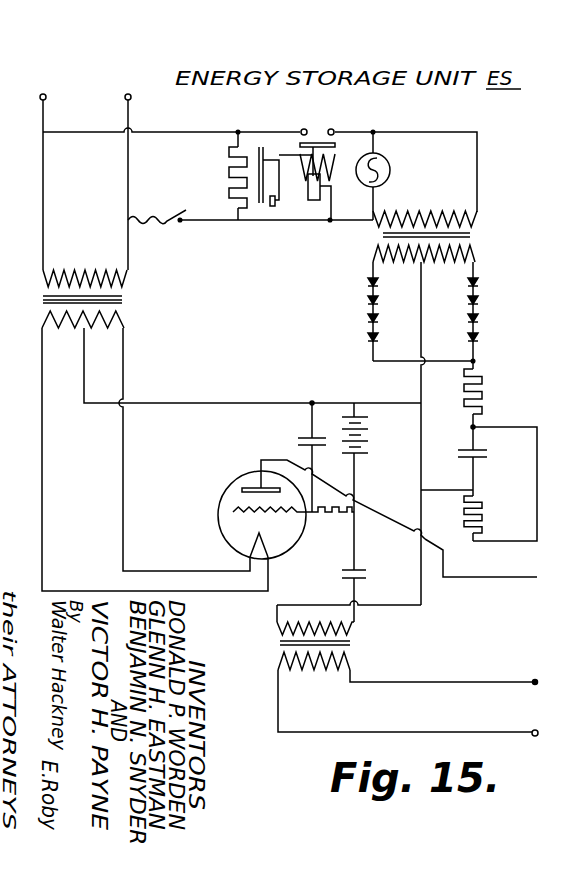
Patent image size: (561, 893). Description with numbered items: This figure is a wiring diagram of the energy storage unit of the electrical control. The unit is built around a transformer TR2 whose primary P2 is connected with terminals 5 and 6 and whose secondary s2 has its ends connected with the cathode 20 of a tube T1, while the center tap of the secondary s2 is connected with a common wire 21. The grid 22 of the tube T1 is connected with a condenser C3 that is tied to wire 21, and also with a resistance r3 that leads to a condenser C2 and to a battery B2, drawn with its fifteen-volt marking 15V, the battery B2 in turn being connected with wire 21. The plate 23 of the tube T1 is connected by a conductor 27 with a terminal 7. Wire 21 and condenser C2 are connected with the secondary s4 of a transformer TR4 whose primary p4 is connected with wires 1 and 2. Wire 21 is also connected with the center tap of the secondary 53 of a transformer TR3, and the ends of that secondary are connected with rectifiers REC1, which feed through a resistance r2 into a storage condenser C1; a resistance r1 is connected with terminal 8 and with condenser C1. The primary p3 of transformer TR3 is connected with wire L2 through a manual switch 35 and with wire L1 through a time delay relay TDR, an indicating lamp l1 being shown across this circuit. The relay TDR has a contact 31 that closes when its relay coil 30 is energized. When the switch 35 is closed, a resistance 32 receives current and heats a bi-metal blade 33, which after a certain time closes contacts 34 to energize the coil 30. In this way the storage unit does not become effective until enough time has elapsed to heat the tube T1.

The terminal 5 is at (42, 102).
The terminal 6 is at (127, 102).
The wire L1 is at (41, 166).
The wire L2 is at (125, 165).
The primary P2 is at (88, 268).
The transformer TR2 is at (124, 298).
The secondary s2 is at (73, 333).
The wire 21 is at (83, 397).
The time delay relay TDR is at (345, 121).
The resistance 32 is at (228, 166).
The bi-metal blade 33 is at (265, 160).
The contact 31 is at (336, 145).
The relay coil 30 is at (326, 178).
The contacts 34 is at (275, 206).
The manual switch 35 is at (170, 223).
The indicating lamp l1 is at (390, 169).
The primary p3 is at (432, 204).
The transformer TR3 is at (450, 236).
The secondary winding of transformer TR3 53 is at (372, 254).
The rectifiers REC1 is at (366, 322).
The resistance r2 is at (482, 403).
The condenser C1 is at (488, 452).
The resistance r1 is at (492, 512).
The wire 2 is at (538, 477).
The terminal 8 is at (548, 534).
The terminal 7 is at (489, 564).
The conductor from tube plate 27 is at (387, 514).
The tube T1 is at (238, 472).
The plate 23 is at (242, 489).
The grid 22 is at (233, 513).
The cathode 20 is at (250, 547).
The resistance r3 is at (333, 526).
The condenser C3 is at (294, 429).
The battery B2 is at (369, 443).
The battery voltage 15V is at (371, 427).
The condenser C2 is at (343, 580).
The transformer TR4 is at (278, 644).
The secondary s4 is at (354, 630).
The primary p4 is at (334, 661).
The wire 1 is at (416, 706).